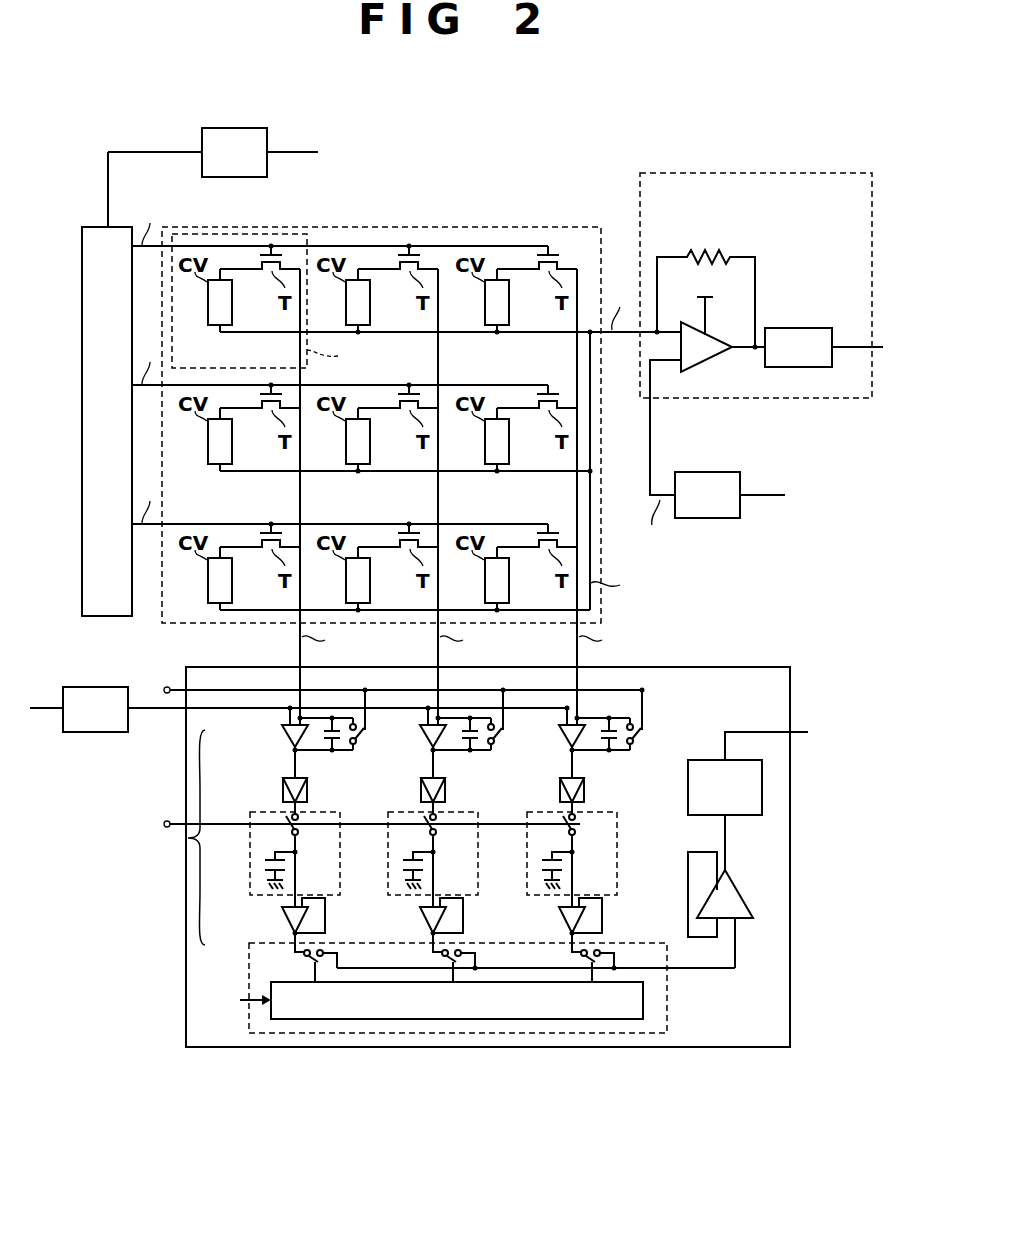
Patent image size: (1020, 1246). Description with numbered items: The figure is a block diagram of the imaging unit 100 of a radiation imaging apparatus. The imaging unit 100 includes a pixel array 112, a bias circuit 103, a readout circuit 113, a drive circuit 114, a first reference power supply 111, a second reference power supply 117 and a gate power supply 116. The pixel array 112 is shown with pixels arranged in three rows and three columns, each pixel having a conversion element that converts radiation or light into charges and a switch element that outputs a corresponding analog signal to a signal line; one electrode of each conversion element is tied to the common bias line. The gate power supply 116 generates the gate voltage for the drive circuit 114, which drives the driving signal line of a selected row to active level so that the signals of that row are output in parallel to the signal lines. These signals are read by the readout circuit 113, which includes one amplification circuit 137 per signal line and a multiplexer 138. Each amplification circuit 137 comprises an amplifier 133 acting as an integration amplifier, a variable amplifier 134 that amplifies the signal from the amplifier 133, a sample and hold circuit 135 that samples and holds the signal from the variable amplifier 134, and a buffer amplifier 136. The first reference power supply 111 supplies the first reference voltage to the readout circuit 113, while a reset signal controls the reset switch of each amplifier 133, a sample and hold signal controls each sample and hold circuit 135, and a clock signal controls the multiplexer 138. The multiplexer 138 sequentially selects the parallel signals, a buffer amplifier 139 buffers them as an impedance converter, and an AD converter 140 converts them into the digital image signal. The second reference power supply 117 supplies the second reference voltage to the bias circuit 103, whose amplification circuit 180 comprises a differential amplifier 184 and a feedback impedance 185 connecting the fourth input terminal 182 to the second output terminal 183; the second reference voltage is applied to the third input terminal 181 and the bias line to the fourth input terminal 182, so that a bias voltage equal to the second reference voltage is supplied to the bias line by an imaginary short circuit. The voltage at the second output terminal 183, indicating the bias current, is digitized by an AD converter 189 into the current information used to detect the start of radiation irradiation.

The imaging unit 100 is at (781, 1106).
The bias circuit 103 is at (818, 172).
The first reference power supply 111 is at (88, 686).
The pixel array 112 is at (565, 226).
The readout circuit 113 is at (186, 940).
The drive circuit 114 is at (107, 421).
The gate power supply 116 is at (237, 128).
The second reference power supply 117 is at (720, 464).
The amplifier 133 is at (436, 720).
The variable amplifier 134 is at (404, 782).
The sample and hold circuit 135 is at (410, 859).
The buffer amplifier 136 is at (419, 940).
The amplification circuit 137 is at (188, 838).
The multiplexer 138 is at (668, 1005).
The buffer amplifier 139 is at (745, 890).
The AD converter 140 is at (683, 792).
The amplification circuit 180 is at (688, 238).
The third input terminal 181 is at (675, 376).
The fourth input terminal 182 is at (677, 324).
The second output terminal 183 is at (742, 352).
The differential amplifier 184 is at (707, 361).
The feedback impedance 185 is at (727, 249).
The AD converter 189 is at (790, 328).